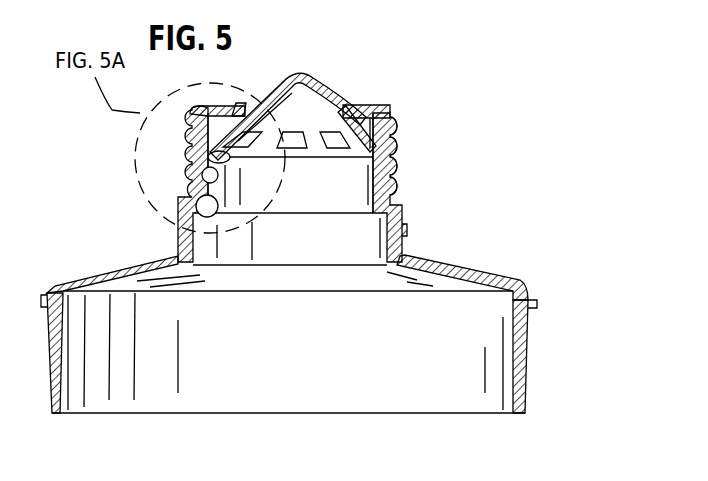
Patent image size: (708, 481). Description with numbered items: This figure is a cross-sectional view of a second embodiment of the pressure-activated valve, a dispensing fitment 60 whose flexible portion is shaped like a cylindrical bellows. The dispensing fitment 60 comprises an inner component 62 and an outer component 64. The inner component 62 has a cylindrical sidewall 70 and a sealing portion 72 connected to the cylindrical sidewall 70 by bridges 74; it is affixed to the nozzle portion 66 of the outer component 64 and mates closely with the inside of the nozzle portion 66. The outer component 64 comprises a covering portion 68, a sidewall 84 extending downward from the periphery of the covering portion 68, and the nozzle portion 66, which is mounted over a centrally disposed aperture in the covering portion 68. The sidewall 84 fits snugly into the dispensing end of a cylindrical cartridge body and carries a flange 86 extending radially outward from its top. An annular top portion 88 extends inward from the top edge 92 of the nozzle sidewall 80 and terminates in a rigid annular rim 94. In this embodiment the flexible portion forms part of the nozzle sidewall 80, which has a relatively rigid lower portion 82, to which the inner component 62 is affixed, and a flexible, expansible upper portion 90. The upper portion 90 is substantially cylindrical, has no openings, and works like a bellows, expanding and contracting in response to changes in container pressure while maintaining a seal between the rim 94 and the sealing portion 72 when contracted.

The dispensing fitment 60 is at (533, 151).
The inner component 62 is at (176, 224).
The outer component 64 is at (490, 273).
The nozzle portion 66 is at (397, 203).
The covering portion 68 is at (110, 268).
The cylindrical sidewall 70 is at (185, 182).
The sealing portion 72 is at (320, 90).
The bridges 74 is at (186, 153).
The nozzle sidewall 80 is at (400, 170).
The rigid lower portion 82 is at (403, 220).
The sidewall 84 is at (527, 348).
The flange 86 is at (537, 302).
The annular top portion 88 is at (363, 105).
The flexible upper portion 90 is at (393, 153).
The top edge 92 is at (385, 110).
The rigid annular rim 94 is at (345, 107).